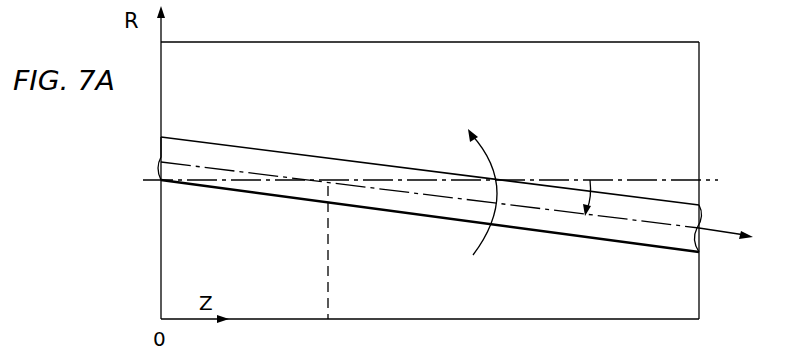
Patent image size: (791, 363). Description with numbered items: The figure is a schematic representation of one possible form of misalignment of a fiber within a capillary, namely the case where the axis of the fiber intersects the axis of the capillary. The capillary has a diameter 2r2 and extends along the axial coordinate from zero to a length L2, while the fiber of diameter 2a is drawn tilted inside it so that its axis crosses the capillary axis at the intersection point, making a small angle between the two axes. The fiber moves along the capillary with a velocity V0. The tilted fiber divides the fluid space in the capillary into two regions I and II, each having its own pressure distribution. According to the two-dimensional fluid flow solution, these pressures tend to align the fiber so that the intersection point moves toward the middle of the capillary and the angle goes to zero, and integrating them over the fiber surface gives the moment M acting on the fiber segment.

The fiber diameter 2a is at (296, 250).
The capillary diameter 2r2 is at (249, 128).
The moment M is at (490, 190).
The fiber velocity V0 is at (731, 251).
The region I is at (404, 89).
The region II is at (403, 255).
The capillary length L2 is at (699, 340).